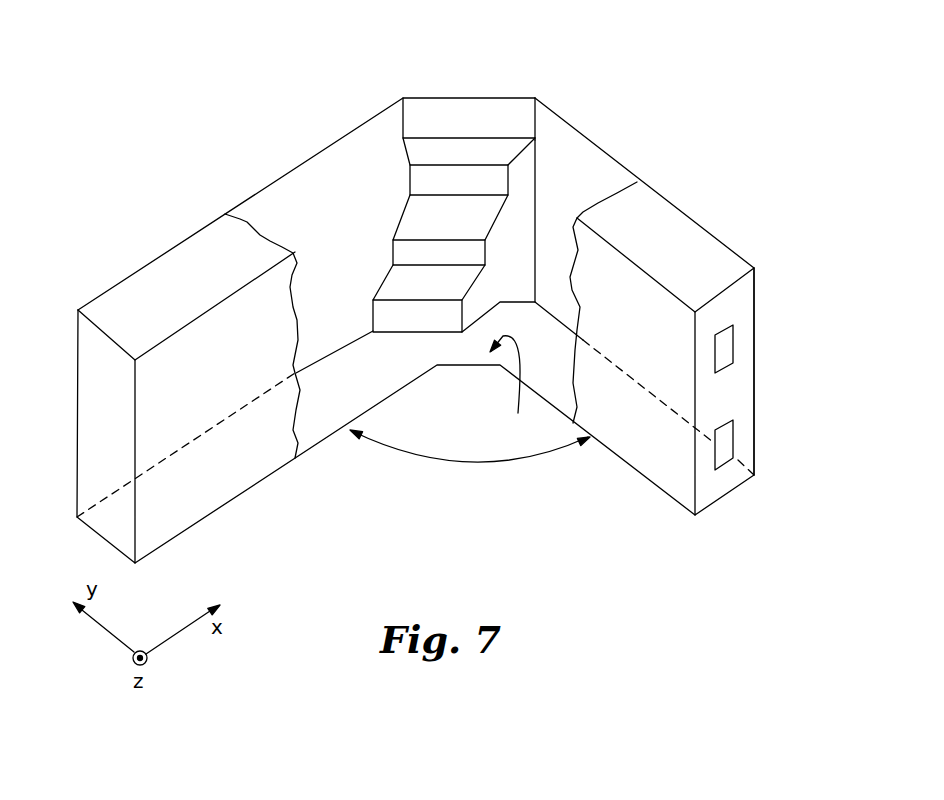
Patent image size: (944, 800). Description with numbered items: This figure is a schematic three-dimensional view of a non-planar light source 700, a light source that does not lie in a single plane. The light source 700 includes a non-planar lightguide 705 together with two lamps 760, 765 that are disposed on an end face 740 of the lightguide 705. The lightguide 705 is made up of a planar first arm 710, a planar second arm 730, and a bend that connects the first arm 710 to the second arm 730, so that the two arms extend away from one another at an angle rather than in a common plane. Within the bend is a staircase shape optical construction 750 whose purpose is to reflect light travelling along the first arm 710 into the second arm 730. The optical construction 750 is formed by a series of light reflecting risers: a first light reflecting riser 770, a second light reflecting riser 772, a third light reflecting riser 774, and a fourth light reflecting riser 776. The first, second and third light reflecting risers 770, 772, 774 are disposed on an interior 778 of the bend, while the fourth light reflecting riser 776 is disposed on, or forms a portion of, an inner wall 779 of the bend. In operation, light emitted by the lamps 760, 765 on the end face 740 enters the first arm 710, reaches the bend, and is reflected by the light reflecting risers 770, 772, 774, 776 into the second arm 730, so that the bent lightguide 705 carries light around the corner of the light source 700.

The non-planar light source 700 is at (660, 86).
The non-planar lightguide 705 is at (135, 273).
The planar first arm 710 is at (668, 215).
The planar second arm 730 is at (212, 503).
The end face 740 is at (747, 292).
The staircase shape optical construction 750 is at (527, 165).
The lamp 760 is at (727, 347).
The lamp 765 is at (727, 433).
The first light reflecting riser 770 is at (432, 320).
The second light reflecting riser 772 is at (398, 250).
The third light reflecting riser 774 is at (440, 175).
The fourth light reflecting riser 776 is at (500, 105).
The interior of bend 778 is at (518, 388).
The inner wall of bend 779 is at (545, 118).